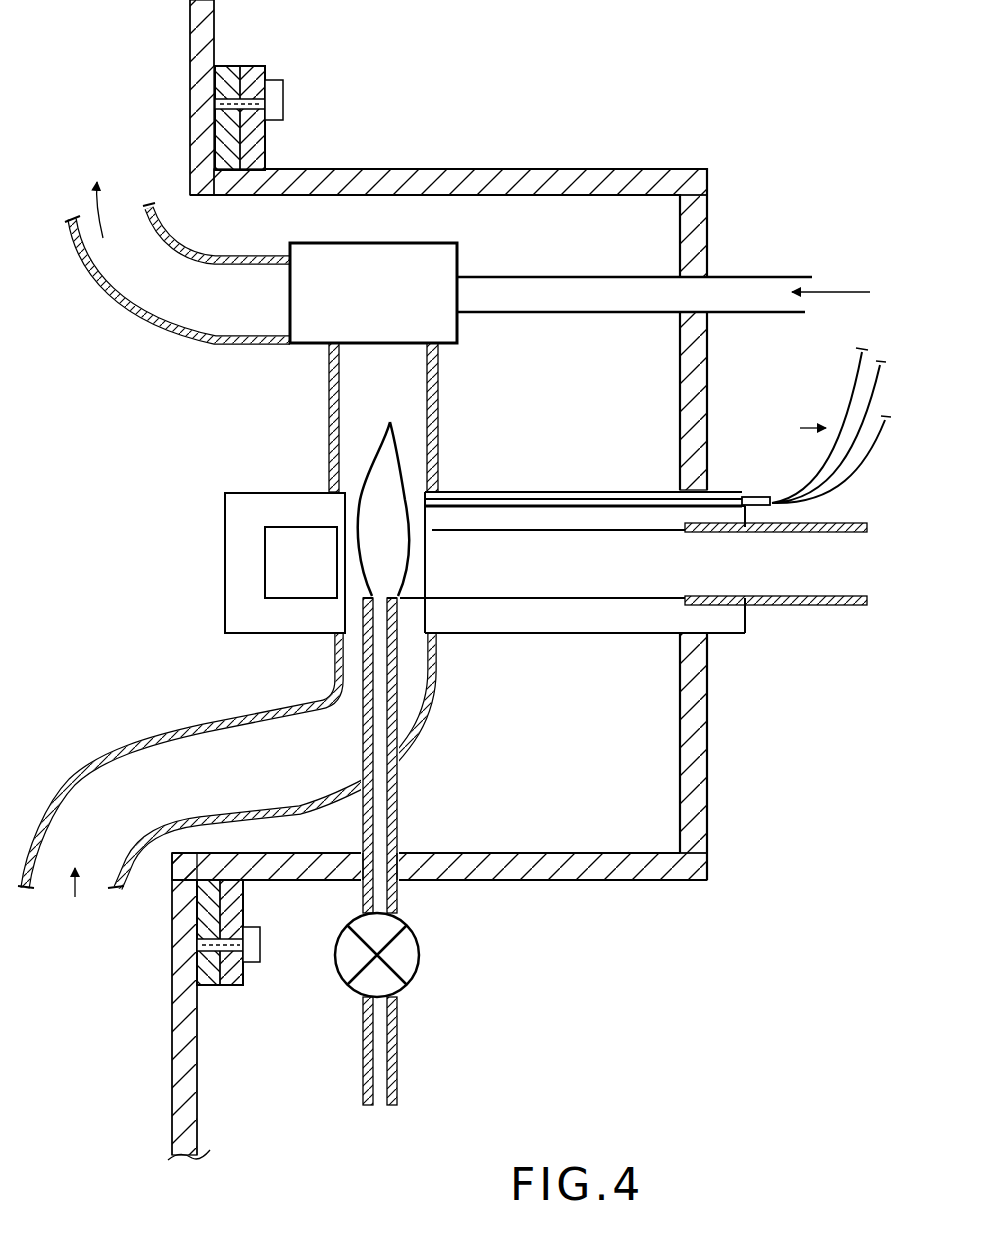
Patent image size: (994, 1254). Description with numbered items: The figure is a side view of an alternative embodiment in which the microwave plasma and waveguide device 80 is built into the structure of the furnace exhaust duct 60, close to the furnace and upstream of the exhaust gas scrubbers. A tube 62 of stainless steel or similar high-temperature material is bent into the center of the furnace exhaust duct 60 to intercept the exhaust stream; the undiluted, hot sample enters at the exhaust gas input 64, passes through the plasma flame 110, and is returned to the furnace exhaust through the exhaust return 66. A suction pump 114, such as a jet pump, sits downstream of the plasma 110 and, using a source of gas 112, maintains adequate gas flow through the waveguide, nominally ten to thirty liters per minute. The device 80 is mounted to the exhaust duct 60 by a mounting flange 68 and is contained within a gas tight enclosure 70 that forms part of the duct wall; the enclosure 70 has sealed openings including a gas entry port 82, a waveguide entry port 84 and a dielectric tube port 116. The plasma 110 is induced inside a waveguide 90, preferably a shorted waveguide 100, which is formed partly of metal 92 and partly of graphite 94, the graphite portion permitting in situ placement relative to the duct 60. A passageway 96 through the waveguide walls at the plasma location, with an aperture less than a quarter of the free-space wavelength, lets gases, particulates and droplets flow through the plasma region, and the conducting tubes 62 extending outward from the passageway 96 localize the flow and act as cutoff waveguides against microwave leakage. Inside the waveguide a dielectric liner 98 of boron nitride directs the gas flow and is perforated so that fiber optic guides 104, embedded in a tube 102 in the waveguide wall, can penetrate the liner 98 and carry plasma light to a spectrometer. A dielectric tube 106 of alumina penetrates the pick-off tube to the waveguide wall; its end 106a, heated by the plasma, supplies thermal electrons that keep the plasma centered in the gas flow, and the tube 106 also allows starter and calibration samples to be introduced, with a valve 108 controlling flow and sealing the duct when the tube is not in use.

The furnace exhaust duct 60 is at (214, 31).
The tube 62 is at (128, 318).
The exhaust gas input 64 is at (72, 900).
The exhaust return 66 is at (96, 192).
The mounting flange 68 is at (265, 67).
The gas tight enclosure 70 is at (625, 878).
The device 80 is at (588, 396).
The gas entry port 82 is at (710, 276).
The waveguide entry port 84 is at (710, 637).
The waveguide 90 is at (778, 514).
The metal 92 is at (825, 610).
The graphite 94 is at (553, 628).
The passageway 96 is at (358, 480).
The dielectric liner 98 is at (337, 558).
The shorted waveguide 100 is at (272, 634).
The tube 102 is at (757, 498).
The fiber optic guides 104 is at (820, 425).
The dielectric tube 106 is at (398, 810).
The end of alumina tube 106a is at (403, 598).
The valve 108 is at (408, 957).
The plasma flame 110 is at (402, 466).
The source of gas 112 is at (796, 291).
The suction pump 114 is at (457, 249).
The dielectric tube port 116 is at (363, 850).